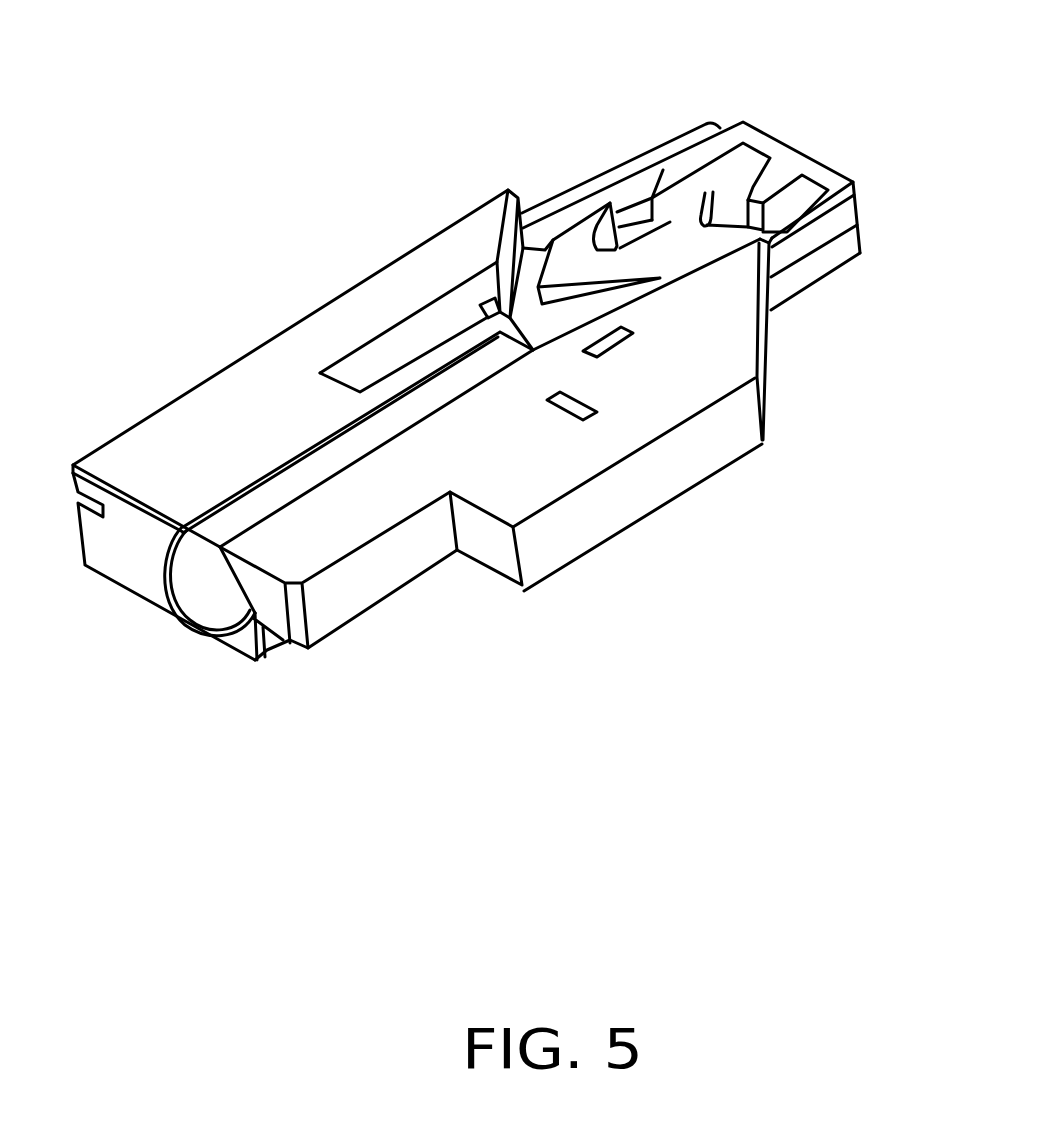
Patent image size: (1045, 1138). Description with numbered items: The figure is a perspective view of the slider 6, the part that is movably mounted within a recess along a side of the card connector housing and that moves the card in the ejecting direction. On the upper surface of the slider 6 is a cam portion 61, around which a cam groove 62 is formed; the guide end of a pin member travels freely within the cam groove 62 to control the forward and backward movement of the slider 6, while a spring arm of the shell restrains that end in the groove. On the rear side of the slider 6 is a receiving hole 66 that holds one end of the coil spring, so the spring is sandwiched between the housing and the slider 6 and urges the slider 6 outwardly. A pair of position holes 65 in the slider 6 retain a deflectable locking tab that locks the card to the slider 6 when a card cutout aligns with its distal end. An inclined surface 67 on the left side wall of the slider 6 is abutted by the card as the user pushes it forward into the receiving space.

The slider 6 is at (350, 236).
The cam portion 61 is at (573, 253).
The cam groove 62 is at (757, 182).
The position holes 65 is at (573, 410).
The receiving hole 66 is at (205, 578).
The inclined surface 67 is at (767, 347).